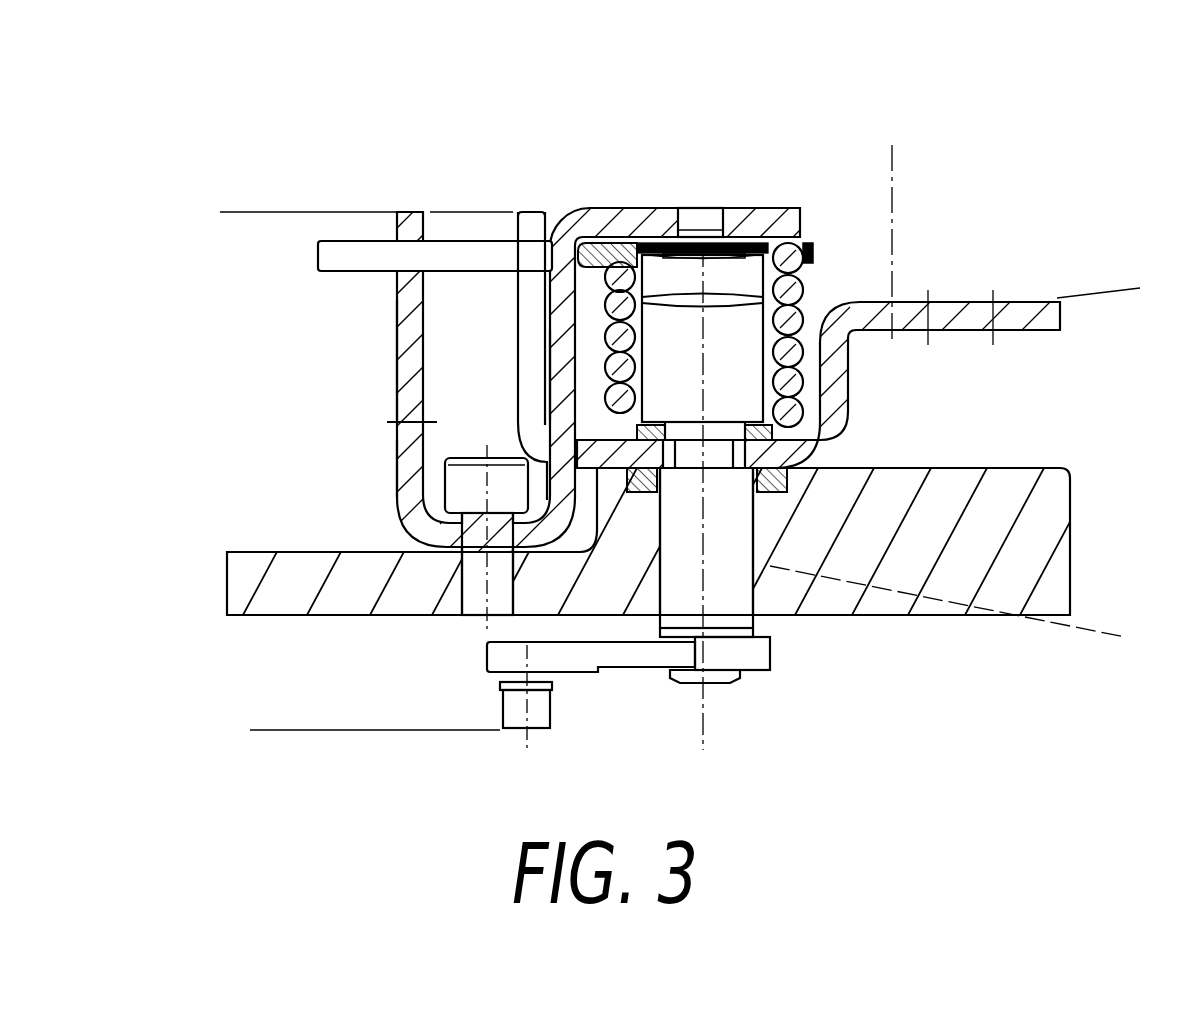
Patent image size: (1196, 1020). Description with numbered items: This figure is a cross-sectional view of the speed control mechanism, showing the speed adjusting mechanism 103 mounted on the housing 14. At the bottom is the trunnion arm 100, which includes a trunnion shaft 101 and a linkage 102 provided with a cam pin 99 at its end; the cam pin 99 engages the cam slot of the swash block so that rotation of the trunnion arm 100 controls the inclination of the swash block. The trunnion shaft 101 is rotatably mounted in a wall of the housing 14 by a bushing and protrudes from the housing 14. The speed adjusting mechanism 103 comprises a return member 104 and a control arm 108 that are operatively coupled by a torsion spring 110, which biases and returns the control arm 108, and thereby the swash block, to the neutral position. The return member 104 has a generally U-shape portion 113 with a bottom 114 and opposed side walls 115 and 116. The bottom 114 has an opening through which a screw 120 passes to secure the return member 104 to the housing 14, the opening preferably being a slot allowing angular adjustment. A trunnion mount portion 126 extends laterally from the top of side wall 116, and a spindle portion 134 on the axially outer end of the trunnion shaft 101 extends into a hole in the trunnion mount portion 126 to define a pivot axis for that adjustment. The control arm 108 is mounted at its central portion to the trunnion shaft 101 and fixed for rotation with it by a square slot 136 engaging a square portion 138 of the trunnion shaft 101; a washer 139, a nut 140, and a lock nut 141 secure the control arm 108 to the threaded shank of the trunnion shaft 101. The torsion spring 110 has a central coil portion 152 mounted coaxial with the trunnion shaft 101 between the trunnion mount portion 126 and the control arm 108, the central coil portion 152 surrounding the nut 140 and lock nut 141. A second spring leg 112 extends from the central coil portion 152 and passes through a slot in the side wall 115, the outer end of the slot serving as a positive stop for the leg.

The speed adjusting mechanism 103 is at (450, 118).
The return member 104 is at (393, 222).
The control arm 108 is at (530, 212).
The second spring leg 112 is at (453, 250).
The U-shape portion 113 is at (397, 390).
The side wall 116 is at (550, 372).
The side wall 115 is at (400, 508).
The bottom 114 is at (450, 543).
The screw 120 is at (455, 590).
The trunnion mount portion 126 is at (745, 215).
The spindle portion 134 is at (693, 207).
The lock nut 141 is at (640, 250).
The square slot 136 is at (803, 250).
The central coil portion 152 is at (805, 290).
The nut 140 is at (752, 345).
The torsion spring 110 is at (848, 377).
The washer 139 is at (860, 462).
The square portion 138 is at (790, 492).
The housing 14 is at (888, 572).
The trunnion shaft 101 is at (733, 600).
The trunnion arm 100 is at (720, 672).
The linkage 102 is at (580, 683).
The cam pin 99 is at (518, 733).